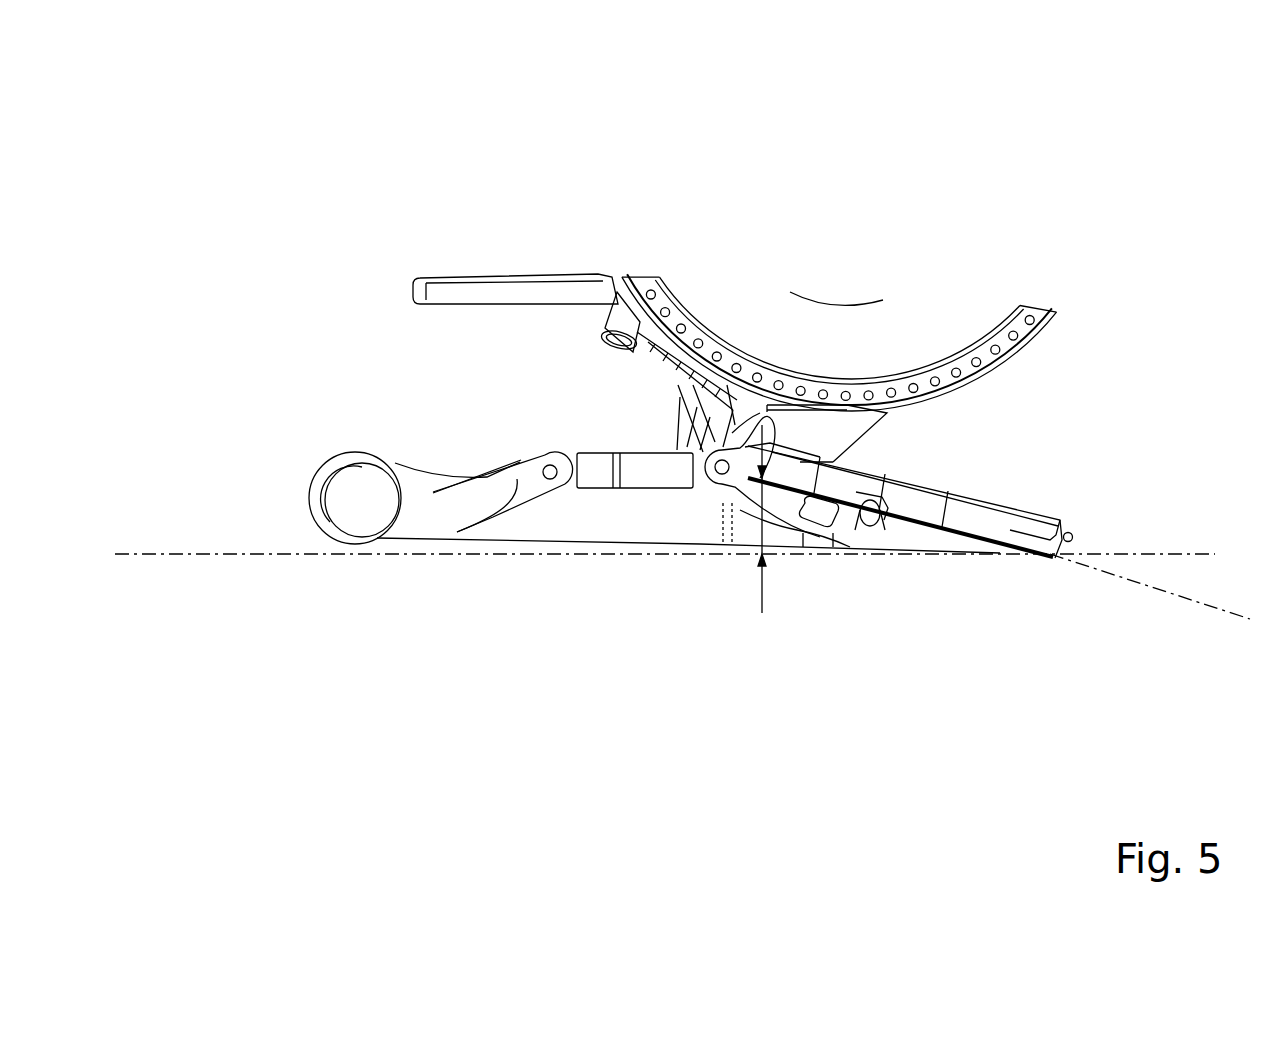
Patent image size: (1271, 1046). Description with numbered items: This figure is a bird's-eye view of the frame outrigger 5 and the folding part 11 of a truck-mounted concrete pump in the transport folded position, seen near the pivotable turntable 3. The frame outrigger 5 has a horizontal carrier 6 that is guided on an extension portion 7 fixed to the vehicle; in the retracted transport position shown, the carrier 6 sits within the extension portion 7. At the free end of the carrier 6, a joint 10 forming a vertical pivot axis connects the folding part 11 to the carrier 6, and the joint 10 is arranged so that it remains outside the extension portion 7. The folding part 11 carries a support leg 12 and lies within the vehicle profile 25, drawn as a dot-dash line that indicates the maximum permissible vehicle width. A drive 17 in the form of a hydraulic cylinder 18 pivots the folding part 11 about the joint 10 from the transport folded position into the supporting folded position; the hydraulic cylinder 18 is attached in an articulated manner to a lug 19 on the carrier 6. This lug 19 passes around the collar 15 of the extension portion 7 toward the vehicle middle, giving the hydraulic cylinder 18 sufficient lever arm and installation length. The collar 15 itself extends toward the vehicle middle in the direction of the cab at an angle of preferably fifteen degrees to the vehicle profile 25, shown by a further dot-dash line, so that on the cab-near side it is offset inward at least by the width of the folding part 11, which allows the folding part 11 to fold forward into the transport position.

The turntable 3 is at (832, 342).
The frame outrigger 5 is at (1015, 413).
The carrier 6 is at (928, 541).
The extension portion 7 is at (990, 483).
The joint 10 is at (871, 538).
The folding part 11 is at (588, 521).
The support leg 12 is at (370, 513).
The collar 15 is at (862, 496).
The drive 17 is at (548, 453).
The hydraulic cylinder 18 is at (652, 473).
The lug 19 is at (747, 493).
The vehicle profile 25 is at (225, 557).